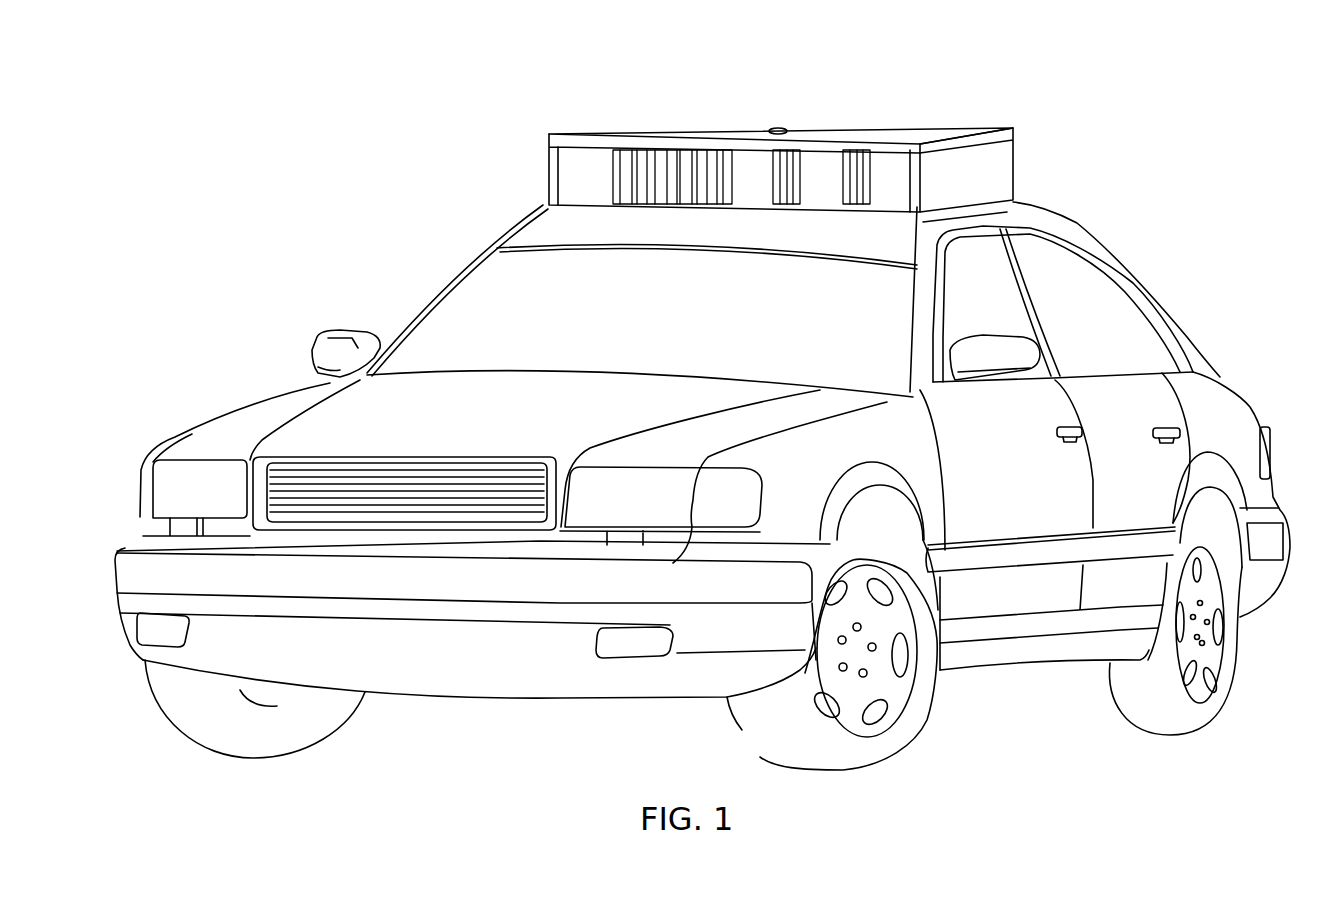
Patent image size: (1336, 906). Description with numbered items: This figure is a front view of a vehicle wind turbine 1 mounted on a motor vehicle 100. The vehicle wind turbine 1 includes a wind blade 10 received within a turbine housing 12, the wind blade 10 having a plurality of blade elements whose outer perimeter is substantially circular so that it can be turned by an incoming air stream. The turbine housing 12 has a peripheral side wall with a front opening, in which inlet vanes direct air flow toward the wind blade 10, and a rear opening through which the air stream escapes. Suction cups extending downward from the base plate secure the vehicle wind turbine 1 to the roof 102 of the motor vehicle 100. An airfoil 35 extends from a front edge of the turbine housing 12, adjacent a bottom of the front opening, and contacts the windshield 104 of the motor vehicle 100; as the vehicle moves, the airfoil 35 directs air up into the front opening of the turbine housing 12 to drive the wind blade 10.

The vehicle wind turbine 1 is at (880, 81).
The wind blade 10 is at (578, 168).
The turbine housing 12 is at (658, 86).
The airfoil 35 is at (567, 227).
The motor vehicle 100 is at (1172, 234).
The roof 102 is at (1040, 218).
The windshield 104 is at (493, 325).